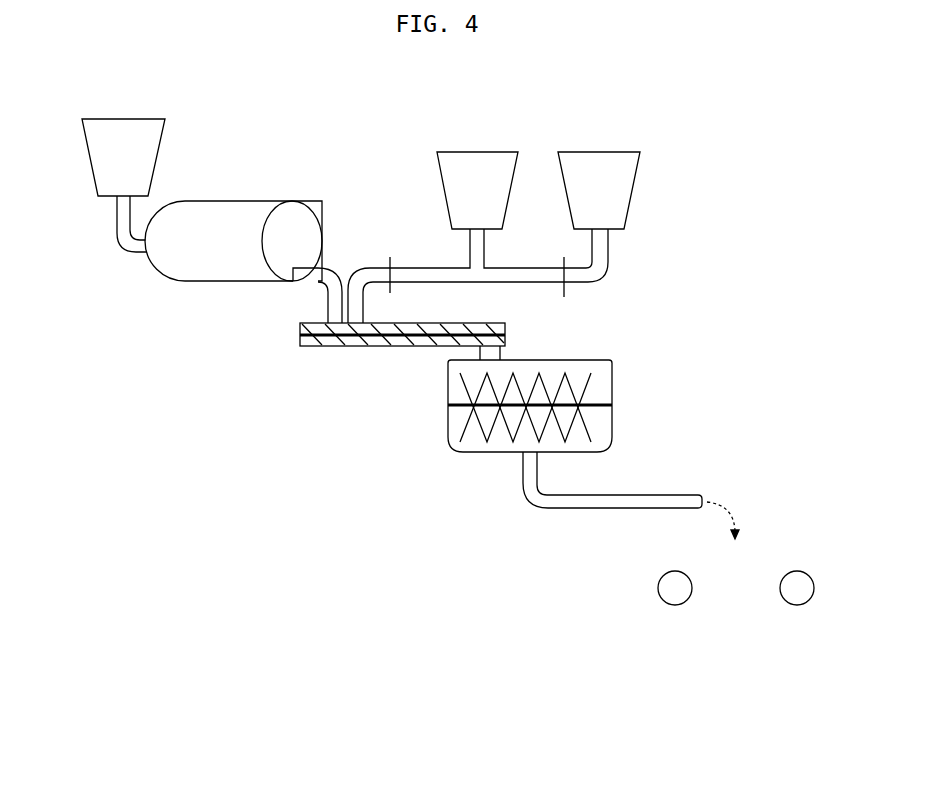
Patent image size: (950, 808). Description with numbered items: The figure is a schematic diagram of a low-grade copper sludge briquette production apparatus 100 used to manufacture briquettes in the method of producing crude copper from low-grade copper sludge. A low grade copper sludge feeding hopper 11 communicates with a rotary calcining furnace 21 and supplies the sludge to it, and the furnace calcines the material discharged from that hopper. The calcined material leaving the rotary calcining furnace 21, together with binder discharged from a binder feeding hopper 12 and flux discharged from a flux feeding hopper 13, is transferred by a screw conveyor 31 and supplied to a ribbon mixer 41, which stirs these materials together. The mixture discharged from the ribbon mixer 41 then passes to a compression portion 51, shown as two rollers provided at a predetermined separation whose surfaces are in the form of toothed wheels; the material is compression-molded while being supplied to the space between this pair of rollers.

The low-grade copper sludge briquette production apparatus 100 is at (30, 104).
The low grade copper sludge feeding hopper 11 is at (155, 155).
The rotary calcining furnace 21 is at (208, 270).
The binder feeding hopper 12 is at (447, 203).
The flux feeding hopper 13 is at (630, 178).
The screw conveyor 31 is at (310, 348).
The ribbon mixer 41 is at (600, 383).
The compression portion 51 is at (788, 667).